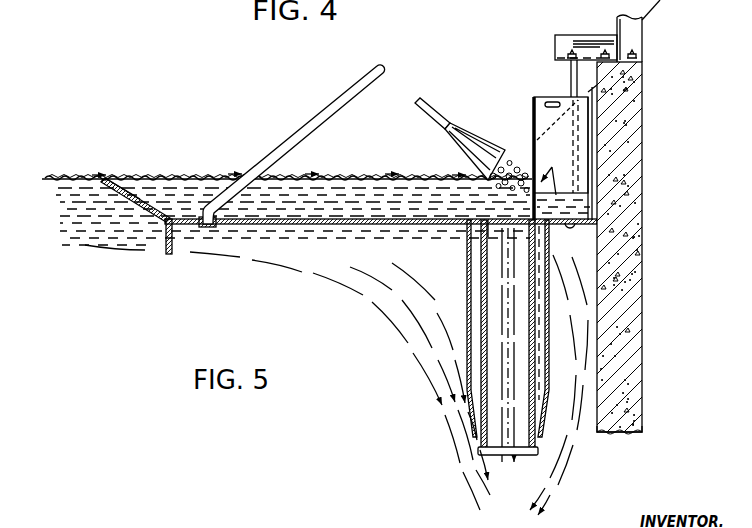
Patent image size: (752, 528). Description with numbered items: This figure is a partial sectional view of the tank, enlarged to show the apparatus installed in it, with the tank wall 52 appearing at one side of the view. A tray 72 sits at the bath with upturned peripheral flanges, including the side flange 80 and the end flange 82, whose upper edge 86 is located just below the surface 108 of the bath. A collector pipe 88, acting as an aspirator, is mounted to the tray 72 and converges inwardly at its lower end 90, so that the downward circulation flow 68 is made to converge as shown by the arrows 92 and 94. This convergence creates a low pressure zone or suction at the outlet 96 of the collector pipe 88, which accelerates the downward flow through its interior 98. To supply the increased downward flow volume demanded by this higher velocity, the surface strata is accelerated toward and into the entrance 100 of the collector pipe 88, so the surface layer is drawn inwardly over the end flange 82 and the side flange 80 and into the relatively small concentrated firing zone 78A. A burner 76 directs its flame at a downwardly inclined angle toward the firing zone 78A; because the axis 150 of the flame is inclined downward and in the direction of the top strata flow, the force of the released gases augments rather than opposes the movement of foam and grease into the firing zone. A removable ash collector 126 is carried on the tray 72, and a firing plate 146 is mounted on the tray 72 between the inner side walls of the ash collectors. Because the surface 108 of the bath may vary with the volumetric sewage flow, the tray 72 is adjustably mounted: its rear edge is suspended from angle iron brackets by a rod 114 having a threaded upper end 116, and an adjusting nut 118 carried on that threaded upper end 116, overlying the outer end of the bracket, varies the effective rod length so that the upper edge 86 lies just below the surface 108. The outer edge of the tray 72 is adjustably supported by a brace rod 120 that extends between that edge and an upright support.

The wall 52 is at (642, 83).
The downward circulation flow 68 is at (398, 329).
The tray 72 is at (153, 176).
The burner 76 is at (483, 147).
The firing zone 78A is at (518, 177).
The side flange 80 is at (340, 192).
The end flange 82 is at (133, 205).
The upper edge 86 is at (103, 179).
The collector pipe 88 is at (548, 312).
The lower end 90 is at (607, 430).
The arrows 92 is at (543, 487).
The arrows 94 is at (478, 493).
The outlet 96 is at (492, 448).
The interior 98 is at (530, 285).
The entrance 100 is at (487, 228).
The surface 108 is at (53, 178).
The rod 114 is at (571, 82).
The threaded upper end 116 is at (608, 0).
The adjusting nut 118 is at (570, 52).
The brace rod 120 is at (307, 130).
The ash collector 126 is at (543, 116).
The firing plate 146 is at (552, 167).
The axis 150 is at (417, 103).